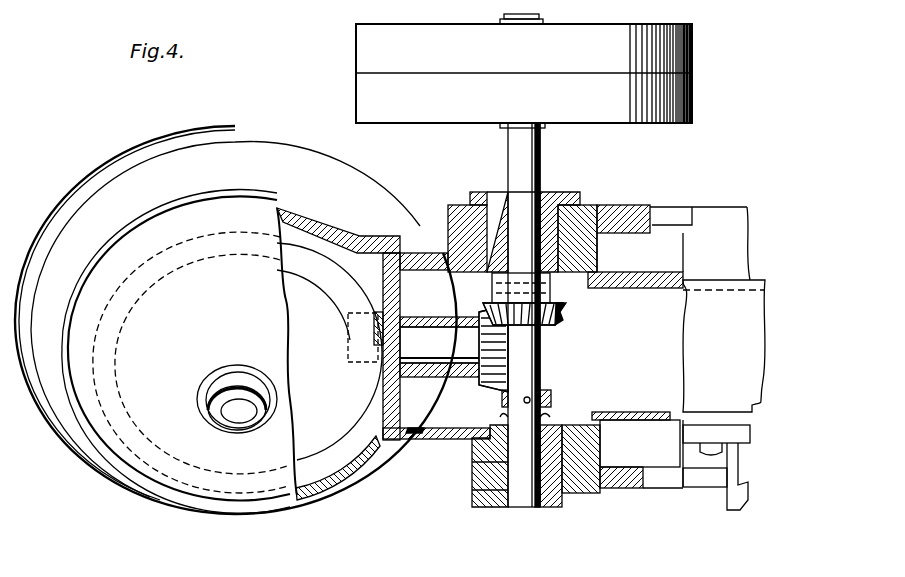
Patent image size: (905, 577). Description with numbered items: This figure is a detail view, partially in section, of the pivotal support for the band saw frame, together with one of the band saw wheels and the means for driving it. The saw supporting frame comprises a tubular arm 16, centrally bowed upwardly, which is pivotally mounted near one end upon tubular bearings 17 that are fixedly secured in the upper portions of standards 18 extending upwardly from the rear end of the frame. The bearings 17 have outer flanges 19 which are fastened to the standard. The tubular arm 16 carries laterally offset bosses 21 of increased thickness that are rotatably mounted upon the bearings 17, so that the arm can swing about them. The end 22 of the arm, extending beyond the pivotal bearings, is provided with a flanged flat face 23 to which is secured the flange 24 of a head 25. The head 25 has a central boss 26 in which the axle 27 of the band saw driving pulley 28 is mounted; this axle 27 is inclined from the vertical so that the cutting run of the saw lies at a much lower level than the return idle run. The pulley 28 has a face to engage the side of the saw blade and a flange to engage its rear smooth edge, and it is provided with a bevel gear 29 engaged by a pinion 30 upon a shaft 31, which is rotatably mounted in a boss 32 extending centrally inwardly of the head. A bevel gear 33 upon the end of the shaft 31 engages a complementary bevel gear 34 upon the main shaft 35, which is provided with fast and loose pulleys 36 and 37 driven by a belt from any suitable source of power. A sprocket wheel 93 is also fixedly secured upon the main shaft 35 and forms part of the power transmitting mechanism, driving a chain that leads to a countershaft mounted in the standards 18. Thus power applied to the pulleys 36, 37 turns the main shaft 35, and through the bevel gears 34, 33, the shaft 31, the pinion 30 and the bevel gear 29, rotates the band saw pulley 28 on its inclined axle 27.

The tubular arm 16 is at (710, 300).
The tubular bearings 17 is at (545, 215).
The standards 18 is at (620, 215).
The outer flanges 19 is at (575, 207).
The laterally offset bosses 21 is at (573, 279).
The end of the arm 22 is at (458, 439).
The flanged flat face 23 is at (406, 440).
The flange 24 is at (377, 450).
The head 25 is at (162, 482).
The central boss 26 is at (250, 428).
The axle 27 is at (247, 407).
The band saw driving pulley 28 is at (75, 428).
The bevel gear 29 is at (333, 278).
The pinion 30 is at (430, 316).
The shaft 31 is at (448, 335).
The boss 32 is at (418, 328).
The bevel gear 33 is at (494, 384).
The complementary bevel gear 34 is at (555, 321).
The main shaft 35 is at (541, 357).
The fast pulley 36 is at (356, 76).
The loose pulley 37 is at (356, 37).
The sprocket wheel 93 is at (550, 406).